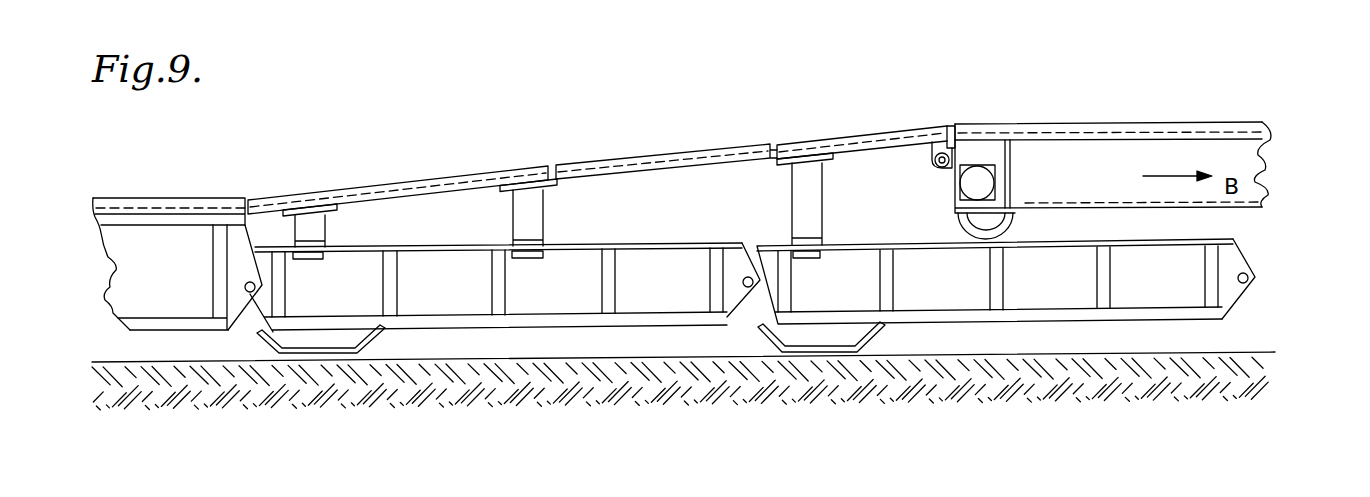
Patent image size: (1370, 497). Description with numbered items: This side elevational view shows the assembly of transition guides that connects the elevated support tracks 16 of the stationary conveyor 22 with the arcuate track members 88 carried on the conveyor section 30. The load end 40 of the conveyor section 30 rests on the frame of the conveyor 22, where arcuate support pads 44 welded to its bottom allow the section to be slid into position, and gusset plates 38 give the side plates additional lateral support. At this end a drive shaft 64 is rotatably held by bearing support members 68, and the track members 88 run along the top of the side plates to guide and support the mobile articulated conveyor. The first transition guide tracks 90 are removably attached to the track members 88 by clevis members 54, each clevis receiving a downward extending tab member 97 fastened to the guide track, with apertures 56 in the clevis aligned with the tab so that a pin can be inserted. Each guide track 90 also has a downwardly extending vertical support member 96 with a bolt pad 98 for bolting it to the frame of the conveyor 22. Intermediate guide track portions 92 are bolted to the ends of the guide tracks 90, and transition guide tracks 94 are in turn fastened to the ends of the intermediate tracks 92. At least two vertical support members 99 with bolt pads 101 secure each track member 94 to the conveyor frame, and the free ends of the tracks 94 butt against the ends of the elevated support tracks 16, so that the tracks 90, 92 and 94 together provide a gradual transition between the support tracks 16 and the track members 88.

The elevated support tracks 16 is at (177, 205).
The first stationary conveyor 22 is at (131, 287).
The conveyor section 30 is at (1282, 148).
The gusset plates 38 is at (1008, 160).
The load end 40 is at (982, 108).
The arcuate support pads 44 is at (958, 222).
The clevis members 54 is at (950, 171).
The apertures 56 is at (943, 153).
The drive shafts 64 is at (980, 173).
The bearing support members 68 is at (993, 198).
The arcuate track members 88 is at (1133, 121).
The first transition guide tracks 90 is at (886, 133).
The intermediate guide track portions 92 is at (685, 151).
The transition guide tracks 94 is at (435, 179).
The vertical support member 96 is at (794, 197).
The tab member 97 is at (932, 150).
The bolt pads 98 is at (805, 258).
The vertical support members 99 is at (522, 218).
The bolt pads 101 is at (308, 259).